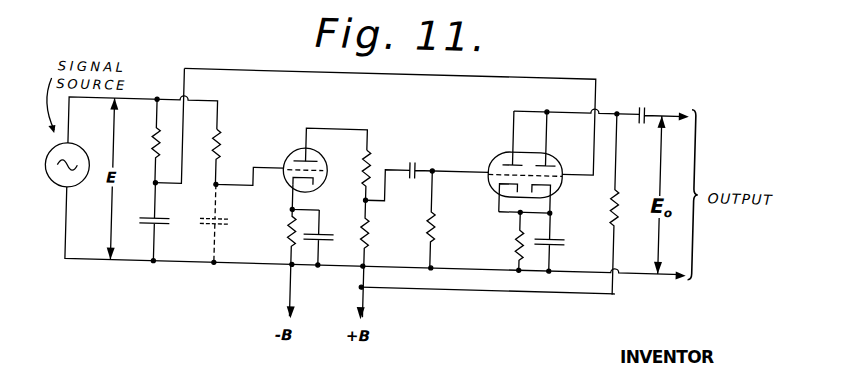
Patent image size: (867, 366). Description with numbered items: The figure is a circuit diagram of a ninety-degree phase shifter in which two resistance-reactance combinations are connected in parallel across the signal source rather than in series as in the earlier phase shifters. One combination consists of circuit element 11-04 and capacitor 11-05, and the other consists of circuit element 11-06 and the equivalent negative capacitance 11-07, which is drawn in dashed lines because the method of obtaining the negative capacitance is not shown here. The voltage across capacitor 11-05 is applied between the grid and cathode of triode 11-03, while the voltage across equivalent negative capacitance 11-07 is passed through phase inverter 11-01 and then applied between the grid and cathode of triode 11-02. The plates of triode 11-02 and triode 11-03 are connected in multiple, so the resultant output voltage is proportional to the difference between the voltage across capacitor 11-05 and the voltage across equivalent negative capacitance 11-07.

The phase inverter 11-01 is at (315, 156).
The triode 11-02 is at (504, 156).
The triode 11-03 is at (546, 154).
The circuit element (resistance) 11-04 is at (152, 150).
The capacitor 11-05 is at (157, 224).
The circuit element (resistance) 11-06 is at (221, 141).
The equivalent negative capacitance 11-07 is at (222, 224).